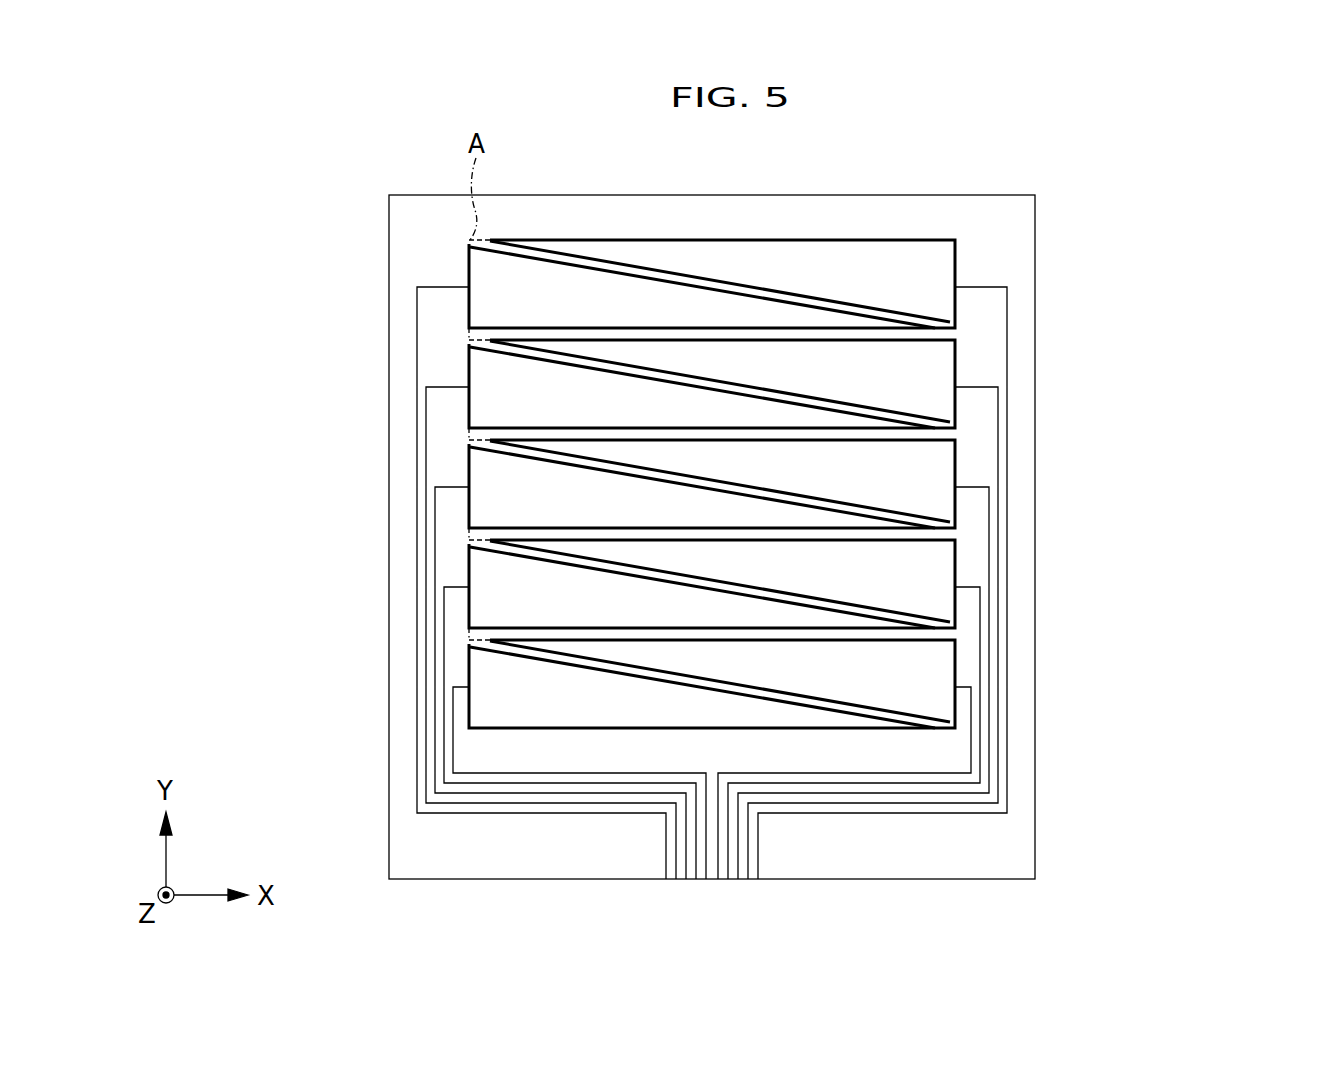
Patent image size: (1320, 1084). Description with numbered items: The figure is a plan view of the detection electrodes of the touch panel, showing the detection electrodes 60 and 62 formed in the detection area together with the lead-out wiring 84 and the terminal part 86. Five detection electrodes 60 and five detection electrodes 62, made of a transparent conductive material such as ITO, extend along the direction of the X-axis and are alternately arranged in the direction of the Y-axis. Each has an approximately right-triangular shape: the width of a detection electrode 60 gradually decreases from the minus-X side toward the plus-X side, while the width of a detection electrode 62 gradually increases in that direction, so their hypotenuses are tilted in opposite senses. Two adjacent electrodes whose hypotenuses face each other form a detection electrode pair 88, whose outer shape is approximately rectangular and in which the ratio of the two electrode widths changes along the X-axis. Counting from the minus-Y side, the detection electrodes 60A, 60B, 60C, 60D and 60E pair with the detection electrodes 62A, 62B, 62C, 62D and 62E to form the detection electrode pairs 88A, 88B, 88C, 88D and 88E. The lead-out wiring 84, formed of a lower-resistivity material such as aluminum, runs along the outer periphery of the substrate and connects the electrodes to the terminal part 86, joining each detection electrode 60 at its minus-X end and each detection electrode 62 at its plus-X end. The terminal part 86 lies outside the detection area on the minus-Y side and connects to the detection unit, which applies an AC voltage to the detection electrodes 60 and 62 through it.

The detection electrode 60 is at (860, 492).
The detection electrode 60A is at (848, 723).
The detection electrode 60B is at (848, 623).
The detection electrode 60C is at (848, 523).
The detection electrode 60D is at (848, 423).
The detection electrode 60E is at (848, 323).
The detection electrode 62 is at (860, 492).
The detection electrode 62A is at (938, 682).
The detection electrode 62B is at (938, 582).
The detection electrode 62C is at (938, 482).
The detection electrode 62D is at (938, 382).
The detection electrode 62E is at (938, 282).
The lead-out wiring 84 is at (417, 714).
The terminal part 86 is at (758, 885).
The detection electrode pair 88 is at (1255, 278).
The detection electrode pair 88A is at (860, 692).
The detection electrode pair 88B is at (860, 592).
The detection electrode pair 88C is at (860, 492).
The detection electrode pair 88D is at (860, 392).
The detection electrode pair 88E is at (860, 292).